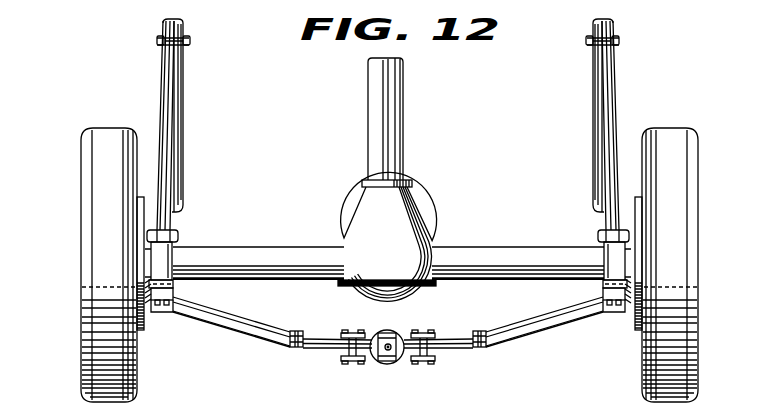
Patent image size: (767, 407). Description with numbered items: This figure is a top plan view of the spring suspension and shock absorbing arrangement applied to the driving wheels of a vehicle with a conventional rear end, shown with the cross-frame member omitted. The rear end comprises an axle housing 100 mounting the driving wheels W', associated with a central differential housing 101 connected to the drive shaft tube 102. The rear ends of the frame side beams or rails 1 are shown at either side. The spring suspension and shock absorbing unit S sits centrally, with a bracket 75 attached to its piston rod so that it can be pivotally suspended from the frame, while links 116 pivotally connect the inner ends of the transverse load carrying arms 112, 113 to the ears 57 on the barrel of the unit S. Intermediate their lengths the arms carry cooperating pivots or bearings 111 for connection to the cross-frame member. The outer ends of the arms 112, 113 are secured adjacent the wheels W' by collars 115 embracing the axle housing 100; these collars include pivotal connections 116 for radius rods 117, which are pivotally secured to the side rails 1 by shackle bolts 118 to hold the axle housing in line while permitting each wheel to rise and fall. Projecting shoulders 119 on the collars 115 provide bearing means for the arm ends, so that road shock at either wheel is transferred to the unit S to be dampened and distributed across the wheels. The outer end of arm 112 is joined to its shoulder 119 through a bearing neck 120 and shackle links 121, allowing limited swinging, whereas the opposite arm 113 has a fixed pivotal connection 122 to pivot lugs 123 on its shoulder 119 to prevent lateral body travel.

The side beams or rails 1 is at (184, 117).
The ears 57 is at (371, 360).
The bracket 75 is at (408, 334).
The axle housing 100 is at (227, 250).
The central differential housing 101 is at (405, 217).
The drive shaft tube 102 is at (397, 121).
The pivots or bearings 111 is at (313, 328).
The transverse load carrying arm 112 is at (518, 329).
The transverse load carrying arm 113 is at (250, 326).
The collars 115 is at (167, 258).
The links / pivotal connections 116 is at (178, 235).
The radius rods 117 is at (158, 155).
The shackle bolts 118 is at (190, 43).
The projecting shoulders 119 is at (176, 291).
The bearing neck 120 is at (627, 314).
The shackle links 121 is at (602, 312).
The fixed pivotal connection 122 is at (168, 318).
The pivot lugs 123 is at (157, 315).
The spring suspension and shock absorbing unit S is at (373, 331).
The driving wheels W' is at (383, 265).